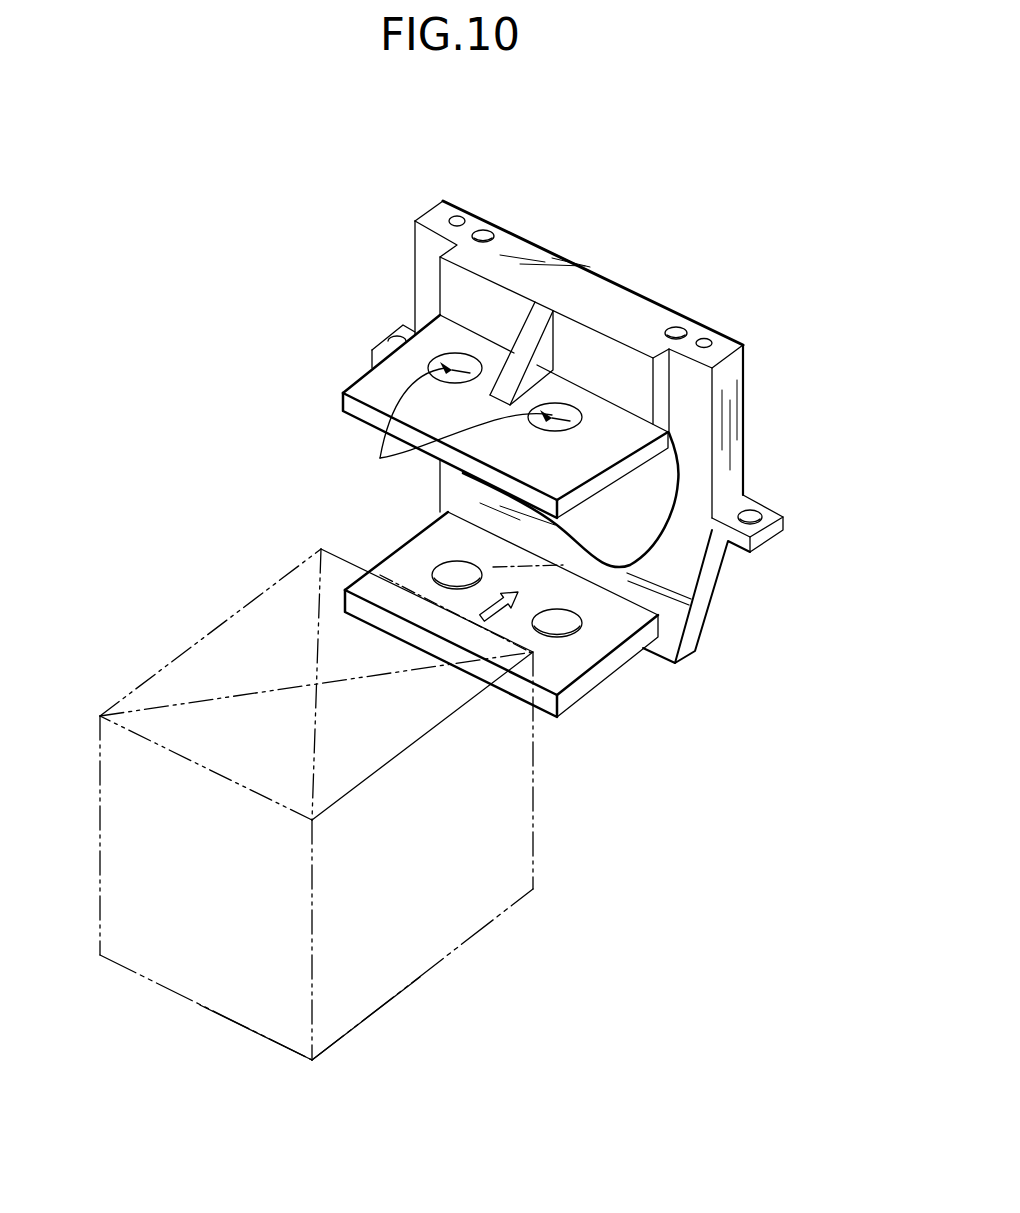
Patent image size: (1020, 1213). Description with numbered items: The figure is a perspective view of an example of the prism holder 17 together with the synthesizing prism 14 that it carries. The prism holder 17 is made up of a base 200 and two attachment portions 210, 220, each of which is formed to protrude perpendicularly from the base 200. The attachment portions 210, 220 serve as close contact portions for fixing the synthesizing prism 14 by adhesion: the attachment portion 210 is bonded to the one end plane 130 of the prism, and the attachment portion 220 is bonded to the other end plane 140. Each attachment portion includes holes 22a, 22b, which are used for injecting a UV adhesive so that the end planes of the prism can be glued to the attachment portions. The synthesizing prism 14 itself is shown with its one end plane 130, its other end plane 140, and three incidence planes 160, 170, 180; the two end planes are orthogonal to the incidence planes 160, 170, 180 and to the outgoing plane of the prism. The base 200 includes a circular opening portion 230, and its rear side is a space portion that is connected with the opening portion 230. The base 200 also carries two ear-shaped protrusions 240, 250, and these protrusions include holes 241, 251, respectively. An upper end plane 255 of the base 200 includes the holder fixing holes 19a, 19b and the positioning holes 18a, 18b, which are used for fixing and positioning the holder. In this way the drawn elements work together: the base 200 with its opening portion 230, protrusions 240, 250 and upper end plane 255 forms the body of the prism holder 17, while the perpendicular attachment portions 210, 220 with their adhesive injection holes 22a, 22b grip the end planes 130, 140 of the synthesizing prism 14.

The synthesizing prism 14 is at (316, 837).
The prism holder 17 is at (542, 443).
The positioning hole 18a is at (457, 216).
The positioning hole 18b is at (705, 338).
The holder fixing hole 19a is at (484, 230).
The holder fixing hole 19b is at (676, 327).
The hole 22a is at (447, 352).
The hole 22b is at (579, 432).
The one end plane 130 is at (223, 635).
The other end plane 140 is at (254, 1040).
The incidence plane 160 is at (437, 940).
The incidence plane 170 is at (178, 985).
The incidence plane 180 is at (316, 837).
The base 200 is at (542, 443).
The attachment portion 210 is at (368, 381).
The attachment portion 220 is at (575, 688).
The circular opening portion 230 is at (666, 486).
The ear-shaped protrusion 240 is at (785, 532).
The hole 241 is at (760, 511).
The ear-shaped protrusion 250 is at (357, 321).
The hole 251 is at (384, 341).
The upper end plane 255 is at (550, 247).